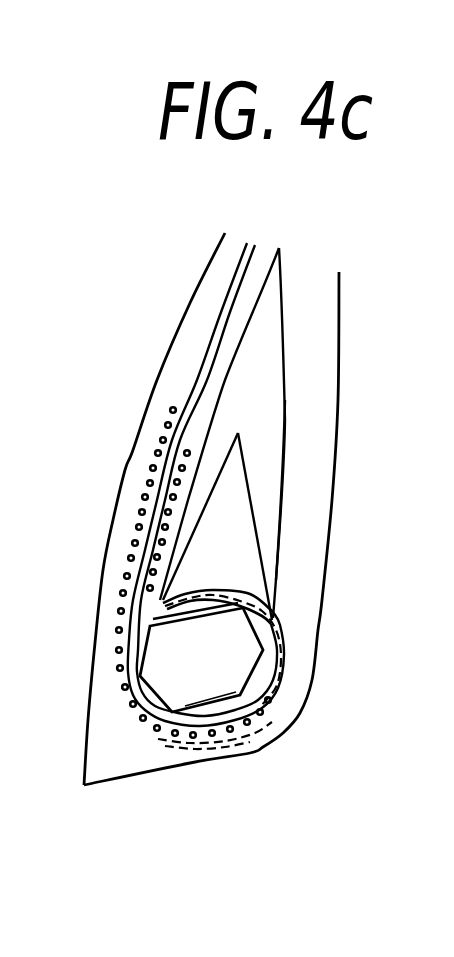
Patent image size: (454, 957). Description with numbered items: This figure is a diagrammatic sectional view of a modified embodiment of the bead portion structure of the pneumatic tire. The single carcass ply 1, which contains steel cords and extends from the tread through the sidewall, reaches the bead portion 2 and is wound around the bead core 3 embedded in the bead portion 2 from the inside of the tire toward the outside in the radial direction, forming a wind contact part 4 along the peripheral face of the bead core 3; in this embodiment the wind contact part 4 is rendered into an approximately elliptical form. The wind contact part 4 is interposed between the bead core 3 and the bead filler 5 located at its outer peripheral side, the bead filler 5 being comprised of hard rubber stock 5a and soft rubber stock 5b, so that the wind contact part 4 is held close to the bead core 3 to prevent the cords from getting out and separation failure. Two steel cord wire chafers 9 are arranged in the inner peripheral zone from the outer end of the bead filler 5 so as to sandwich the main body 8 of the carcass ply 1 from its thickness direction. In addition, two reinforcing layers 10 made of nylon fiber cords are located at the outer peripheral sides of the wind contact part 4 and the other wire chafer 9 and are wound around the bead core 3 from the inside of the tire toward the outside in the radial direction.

The carcass ply 1 is at (118, 610).
The bead portion 2 is at (347, 487).
The bead core 3 is at (225, 660).
The wind contact part 4 is at (270, 592).
The bead filler 5 is at (290, 422).
The hard rubber stock 5a is at (227, 552).
The soft rubber stock 5b is at (262, 368).
The main body of the carcass ply 8 is at (218, 318).
The wire chafer 9 is at (182, 468).
The additional reinforcing layer 10 is at (267, 728).